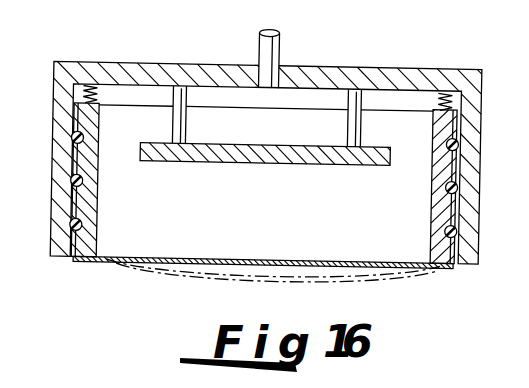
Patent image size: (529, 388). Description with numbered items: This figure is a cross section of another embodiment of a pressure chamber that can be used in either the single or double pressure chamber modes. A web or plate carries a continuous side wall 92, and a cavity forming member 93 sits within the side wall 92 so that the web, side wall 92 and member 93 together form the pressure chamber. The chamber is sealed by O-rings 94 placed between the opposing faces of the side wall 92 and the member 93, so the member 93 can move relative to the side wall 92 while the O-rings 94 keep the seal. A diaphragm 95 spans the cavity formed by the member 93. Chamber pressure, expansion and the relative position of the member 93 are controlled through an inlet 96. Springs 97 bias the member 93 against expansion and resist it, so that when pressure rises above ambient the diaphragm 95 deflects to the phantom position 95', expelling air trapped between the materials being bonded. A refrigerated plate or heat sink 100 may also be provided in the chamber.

The continuous side wall 92 is at (52, 248).
The cavity forming member 93 is at (100, 196).
The O-rings 94 is at (446, 228).
The diaphragm 95 is at (263, 245).
The deflected position of diaphragm 95' is at (272, 286).
The inlet 96 is at (278, 48).
The springs 97 is at (96, 100).
The refrigerated plate or heat sink 100 is at (262, 164).